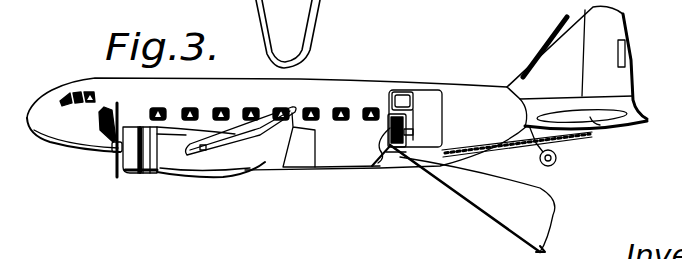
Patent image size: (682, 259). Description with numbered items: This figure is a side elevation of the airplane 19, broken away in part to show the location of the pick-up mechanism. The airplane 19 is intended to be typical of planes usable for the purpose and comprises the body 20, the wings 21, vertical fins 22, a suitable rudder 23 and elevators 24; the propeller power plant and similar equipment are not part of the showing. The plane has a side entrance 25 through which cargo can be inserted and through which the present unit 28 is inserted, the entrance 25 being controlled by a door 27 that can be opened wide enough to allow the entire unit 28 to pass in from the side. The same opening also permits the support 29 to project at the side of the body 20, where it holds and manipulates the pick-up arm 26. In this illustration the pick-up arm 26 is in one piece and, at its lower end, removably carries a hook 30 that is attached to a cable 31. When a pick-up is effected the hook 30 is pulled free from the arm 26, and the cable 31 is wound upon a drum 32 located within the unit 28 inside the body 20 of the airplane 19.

The airplane 19 is at (251, 102).
The body 20 is at (332, 92).
The wings 21 is at (280, 152).
The vertical fins 22 is at (565, 75).
The rudder 23 is at (616, 72).
The elevators 24 is at (588, 126).
The entrance 25 is at (400, 96).
The pick-up arm 26 is at (478, 211).
The door 27 is at (432, 112).
The unit 28 is at (409, 134).
The support 29 is at (392, 165).
The hook 30 is at (540, 255).
The cable 31 is at (550, 195).
The drum 32 is at (396, 126).